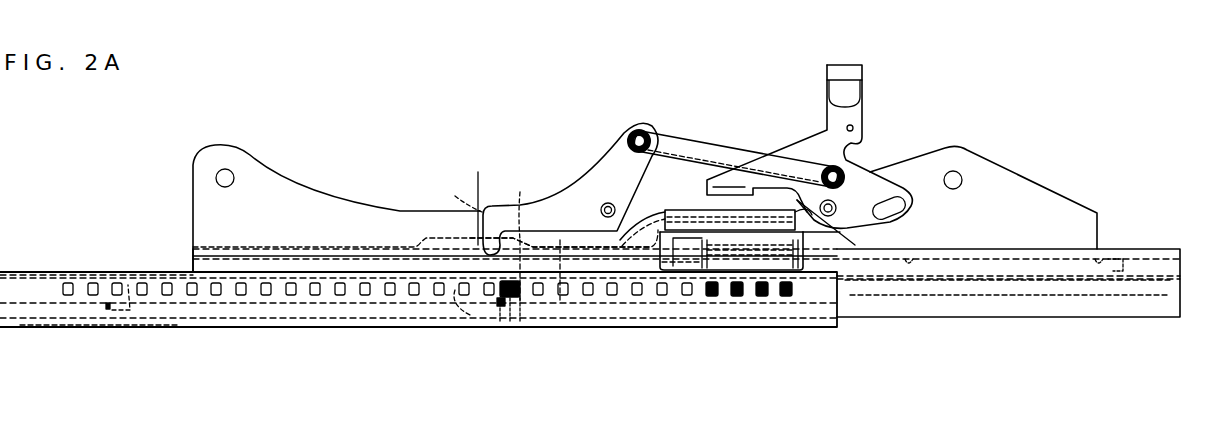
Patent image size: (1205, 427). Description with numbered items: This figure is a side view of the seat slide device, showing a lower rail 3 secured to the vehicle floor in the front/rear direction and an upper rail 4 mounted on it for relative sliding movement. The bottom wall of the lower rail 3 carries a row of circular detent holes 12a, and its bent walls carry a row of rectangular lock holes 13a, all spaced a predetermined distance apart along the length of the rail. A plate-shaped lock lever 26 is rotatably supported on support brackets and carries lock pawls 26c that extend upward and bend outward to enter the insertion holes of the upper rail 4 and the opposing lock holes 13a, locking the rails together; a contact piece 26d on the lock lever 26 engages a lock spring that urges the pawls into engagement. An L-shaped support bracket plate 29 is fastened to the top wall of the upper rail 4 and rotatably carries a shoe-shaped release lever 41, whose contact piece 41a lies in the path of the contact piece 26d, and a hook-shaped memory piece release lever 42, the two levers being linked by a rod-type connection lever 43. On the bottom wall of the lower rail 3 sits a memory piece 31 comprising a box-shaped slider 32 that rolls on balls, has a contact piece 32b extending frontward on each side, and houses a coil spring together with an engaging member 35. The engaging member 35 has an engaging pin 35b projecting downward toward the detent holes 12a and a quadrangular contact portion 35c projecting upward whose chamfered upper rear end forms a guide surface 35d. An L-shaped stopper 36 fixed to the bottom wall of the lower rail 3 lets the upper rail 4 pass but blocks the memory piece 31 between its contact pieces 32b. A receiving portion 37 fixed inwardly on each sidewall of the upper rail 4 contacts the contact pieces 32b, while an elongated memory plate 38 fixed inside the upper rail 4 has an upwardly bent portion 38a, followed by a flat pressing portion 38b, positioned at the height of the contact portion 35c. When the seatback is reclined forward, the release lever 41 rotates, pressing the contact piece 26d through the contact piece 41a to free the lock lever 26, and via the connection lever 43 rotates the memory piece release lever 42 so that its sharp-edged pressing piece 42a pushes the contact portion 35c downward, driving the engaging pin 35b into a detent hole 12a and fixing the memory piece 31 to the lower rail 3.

The lower rail 3 is at (31, 326).
The upper rail 4 is at (1157, 259).
The detent holes 12a is at (150, 330).
The lock holes 13a is at (85, 271).
The lock lever 26 is at (848, 200).
The lock pawls 26c is at (707, 300).
The contact piece 26d is at (682, 213).
The support bracket plate 29 is at (1027, 183).
The memory piece 31 is at (550, 328).
The slider 32 is at (530, 305).
The contact piece 32b is at (455, 328).
The engaging member 35 is at (560, 300).
The engaging pin 35b is at (490, 318).
The contact portion 35c is at (445, 194).
The guide surface 35d is at (521, 205).
The stopper 36 is at (129, 285).
The receiving portion 37 is at (424, 240).
The memory plate 38 is at (952, 281).
The bent portion 38a is at (557, 247).
The pressing portion 38b is at (884, 282).
The release lever 41 is at (862, 110).
The contact piece 41a is at (708, 186).
The memory piece release lever 42 is at (620, 158).
The pressing piece 42a is at (472, 197).
The connection lever 43 is at (682, 130).